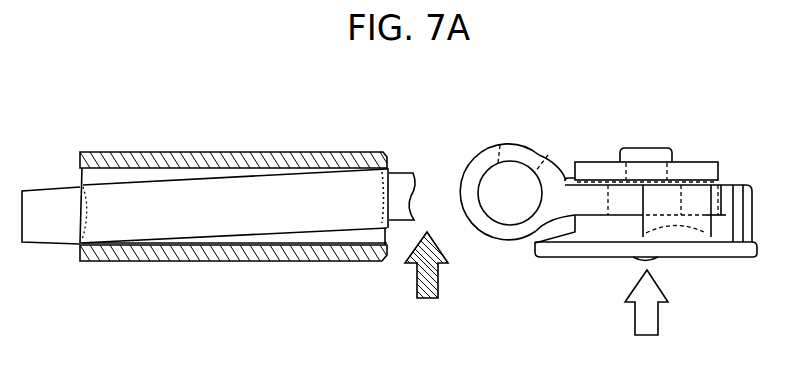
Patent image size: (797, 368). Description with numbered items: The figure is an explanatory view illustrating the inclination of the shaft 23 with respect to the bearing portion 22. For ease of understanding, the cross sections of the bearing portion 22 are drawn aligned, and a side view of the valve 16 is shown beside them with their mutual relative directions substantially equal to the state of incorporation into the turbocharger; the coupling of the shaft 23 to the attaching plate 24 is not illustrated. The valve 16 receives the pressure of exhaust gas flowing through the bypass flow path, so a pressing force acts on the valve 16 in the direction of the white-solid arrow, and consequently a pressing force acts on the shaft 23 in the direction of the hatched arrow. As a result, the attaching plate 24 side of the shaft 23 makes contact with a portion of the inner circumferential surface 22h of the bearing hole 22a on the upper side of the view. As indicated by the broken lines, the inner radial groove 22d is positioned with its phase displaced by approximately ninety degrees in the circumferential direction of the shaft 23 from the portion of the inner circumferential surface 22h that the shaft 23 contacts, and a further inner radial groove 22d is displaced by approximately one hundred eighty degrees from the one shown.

The bearing portion 22 is at (144, 124).
The shaft 23 is at (186, 174).
The bearing hole 22a is at (233, 286).
The inner circumferential surface 22h is at (331, 238).
The inner radial groove 22d is at (382, 223).
The attaching plate 24 is at (575, 180).
The valve 16 is at (732, 258).